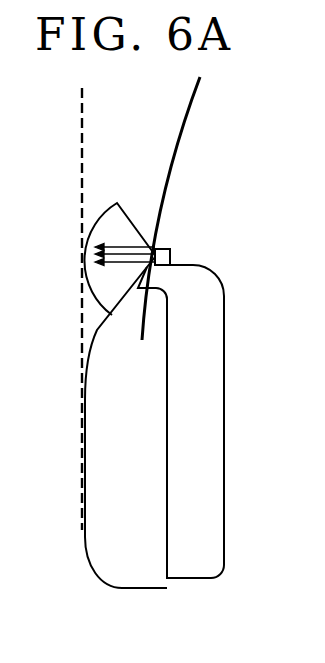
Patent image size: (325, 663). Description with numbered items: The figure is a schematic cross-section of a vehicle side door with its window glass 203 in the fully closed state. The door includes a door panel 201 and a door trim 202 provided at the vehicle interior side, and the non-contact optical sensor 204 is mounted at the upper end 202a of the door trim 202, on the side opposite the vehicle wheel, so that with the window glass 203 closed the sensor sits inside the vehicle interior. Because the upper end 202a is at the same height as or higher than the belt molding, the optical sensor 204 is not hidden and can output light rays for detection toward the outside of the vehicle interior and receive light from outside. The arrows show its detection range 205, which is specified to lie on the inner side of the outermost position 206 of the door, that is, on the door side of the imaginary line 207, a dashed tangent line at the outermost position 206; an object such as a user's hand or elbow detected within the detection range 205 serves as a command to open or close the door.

The door panel 201 is at (130, 588).
The door trim 202 is at (223, 428).
The upper end of door trim 202a is at (193, 266).
The window glass 203 is at (177, 152).
The optical sensor 204 is at (160, 247).
The detection range 205 is at (117, 203).
The outermost position 206 is at (82, 440).
The imaginary line 207 is at (92, 116).